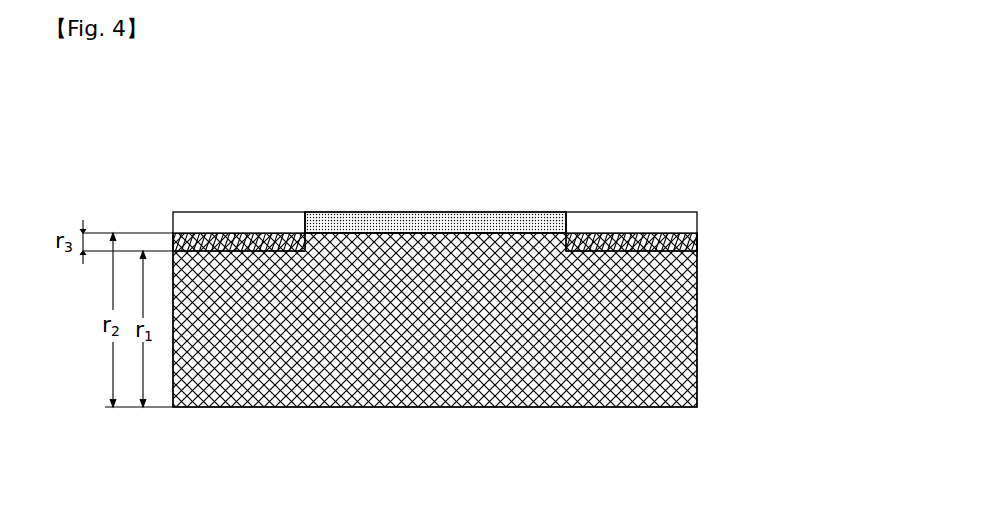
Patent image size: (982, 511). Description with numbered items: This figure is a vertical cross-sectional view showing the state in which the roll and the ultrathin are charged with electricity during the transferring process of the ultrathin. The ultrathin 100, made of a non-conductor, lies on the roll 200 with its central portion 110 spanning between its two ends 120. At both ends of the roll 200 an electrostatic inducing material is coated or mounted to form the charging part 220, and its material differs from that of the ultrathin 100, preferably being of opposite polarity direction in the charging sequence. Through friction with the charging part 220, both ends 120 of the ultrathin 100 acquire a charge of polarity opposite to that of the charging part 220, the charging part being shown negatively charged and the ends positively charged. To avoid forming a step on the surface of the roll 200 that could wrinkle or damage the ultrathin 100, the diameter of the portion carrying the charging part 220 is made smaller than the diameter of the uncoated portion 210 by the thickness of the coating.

The ultrathin 100 is at (435, 159).
The heating portion 110 is at (435, 188).
The both ends of the ultrathin 120 is at (240, 212).
The roll 200 is at (525, 317).
The portion in which the charging part is not formed 210 is at (697, 305).
The charging part 220 is at (697, 245).